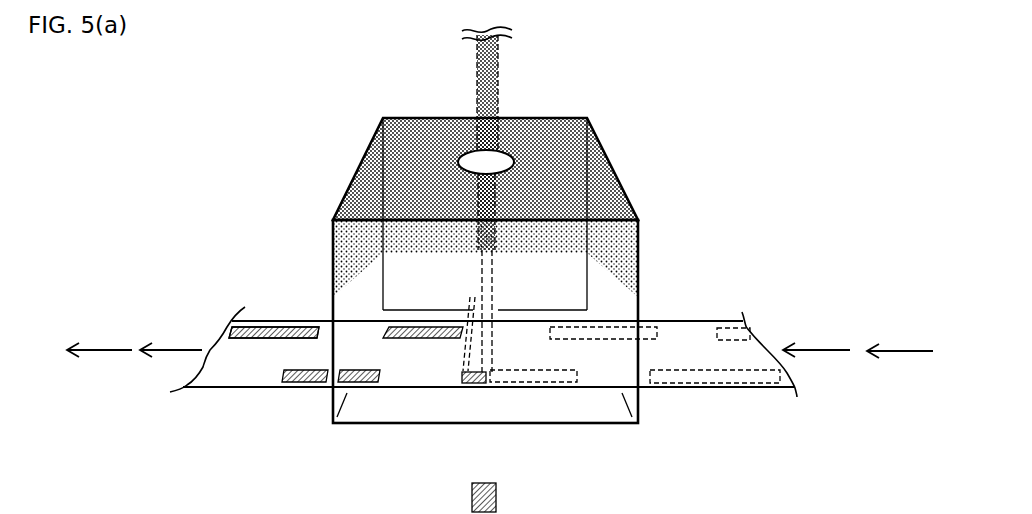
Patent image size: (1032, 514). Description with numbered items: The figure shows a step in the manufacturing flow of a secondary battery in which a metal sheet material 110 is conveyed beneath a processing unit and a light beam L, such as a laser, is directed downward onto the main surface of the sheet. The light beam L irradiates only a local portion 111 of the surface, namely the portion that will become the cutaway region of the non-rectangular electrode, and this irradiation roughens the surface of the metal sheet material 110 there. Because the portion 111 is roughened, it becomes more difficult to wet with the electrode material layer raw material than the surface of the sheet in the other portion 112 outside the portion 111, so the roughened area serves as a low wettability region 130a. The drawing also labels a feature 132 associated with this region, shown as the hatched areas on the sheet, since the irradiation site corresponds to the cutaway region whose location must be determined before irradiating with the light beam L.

The light beam L is at (490, 88).
The metal sheet material 110 is at (242, 360).
The portion that becomes the cutaway region of the non-rectangular electrode 111 is at (268, 338).
The other portion 112 is at (690, 348).
The wiring member 132 is at (316, 298).
The low wettability region 130a is at (260, 317).